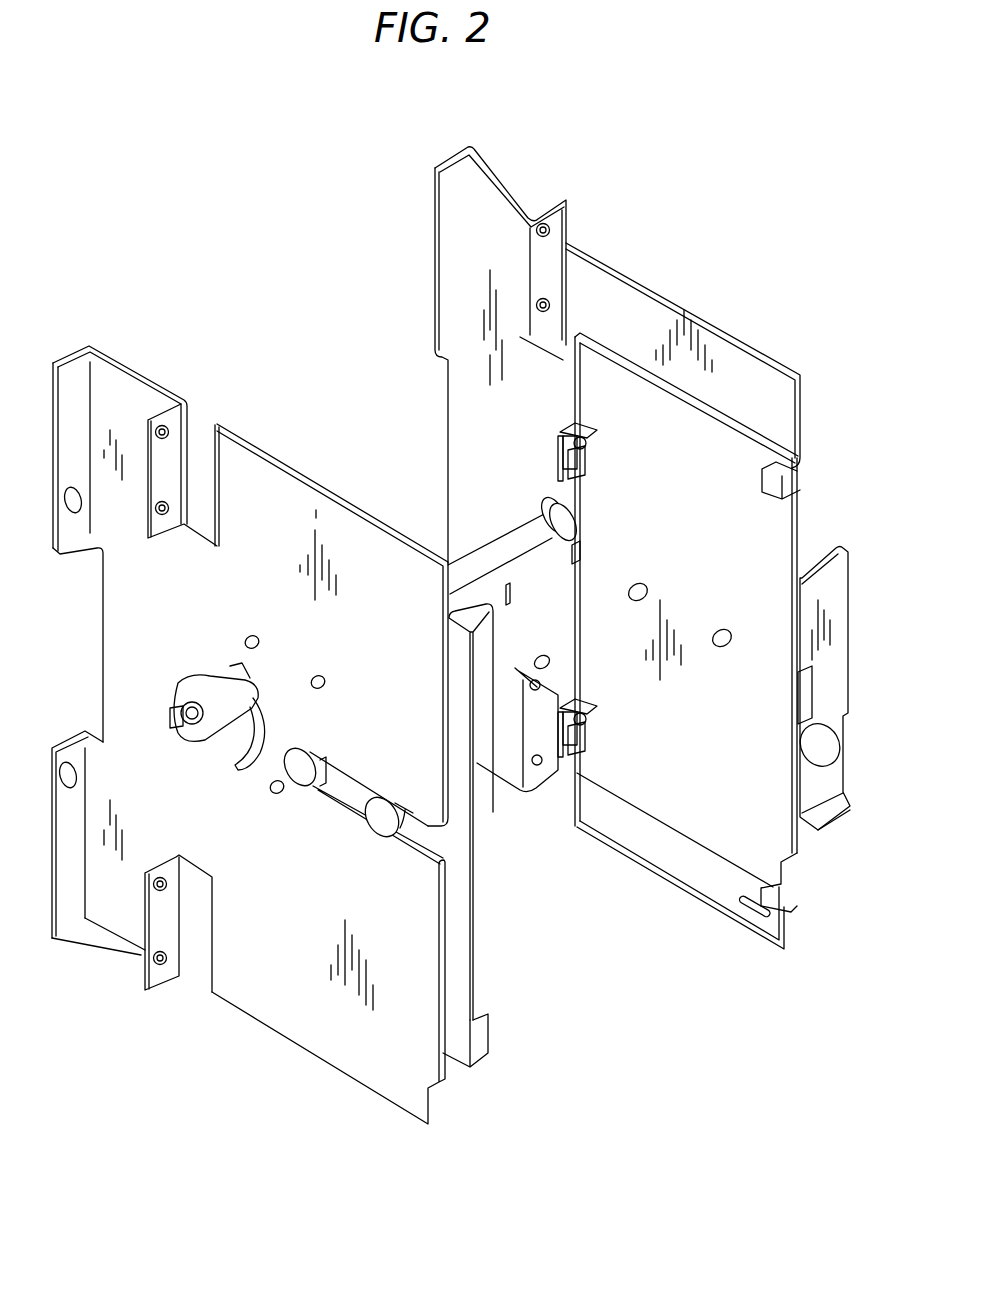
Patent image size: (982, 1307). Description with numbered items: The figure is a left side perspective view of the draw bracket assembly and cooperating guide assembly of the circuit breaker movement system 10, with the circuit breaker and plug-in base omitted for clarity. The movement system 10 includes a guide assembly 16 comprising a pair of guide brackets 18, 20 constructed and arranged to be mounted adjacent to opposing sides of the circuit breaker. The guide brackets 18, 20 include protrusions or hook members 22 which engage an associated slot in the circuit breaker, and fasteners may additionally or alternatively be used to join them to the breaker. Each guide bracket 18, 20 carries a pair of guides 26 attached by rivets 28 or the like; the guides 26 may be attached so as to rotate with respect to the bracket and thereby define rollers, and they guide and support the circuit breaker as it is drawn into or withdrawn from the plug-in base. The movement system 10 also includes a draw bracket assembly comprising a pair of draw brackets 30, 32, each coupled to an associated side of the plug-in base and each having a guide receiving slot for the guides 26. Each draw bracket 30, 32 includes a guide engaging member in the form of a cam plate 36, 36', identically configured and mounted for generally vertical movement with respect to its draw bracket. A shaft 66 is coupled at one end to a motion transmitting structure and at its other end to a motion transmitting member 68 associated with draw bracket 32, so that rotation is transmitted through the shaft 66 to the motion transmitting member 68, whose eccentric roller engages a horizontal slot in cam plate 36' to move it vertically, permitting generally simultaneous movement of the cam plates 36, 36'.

The movement system 10 is at (709, 192).
The guide assembly 16 is at (480, 991).
The guide bracket 18 is at (723, 750).
The guide bracket 20 is at (477, 935).
The hook members 22 is at (578, 462).
The guides 26 is at (382, 823).
The rivets 28 is at (720, 628).
The draw bracket 30 is at (733, 363).
The draw bracket 32 is at (277, 1019).
The cam plate 36 is at (613, 542).
The cam plate 36' is at (376, 781).
The shaft 66 is at (515, 540).
The motion transmitting member 68 is at (232, 682).